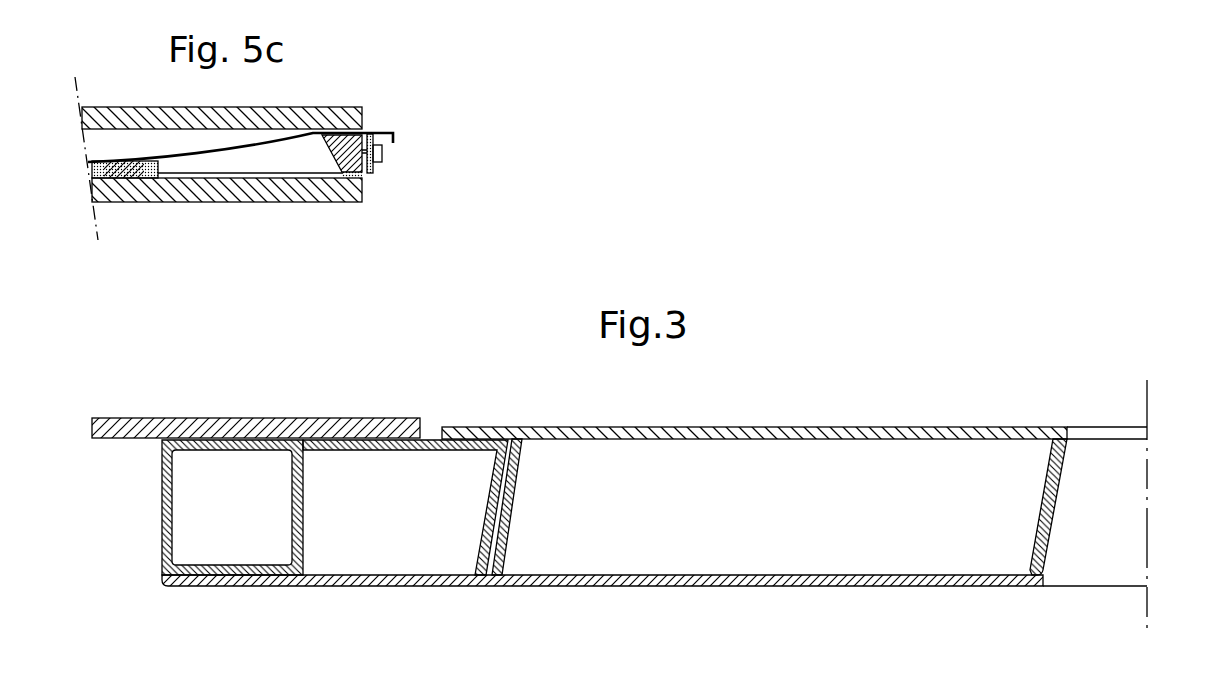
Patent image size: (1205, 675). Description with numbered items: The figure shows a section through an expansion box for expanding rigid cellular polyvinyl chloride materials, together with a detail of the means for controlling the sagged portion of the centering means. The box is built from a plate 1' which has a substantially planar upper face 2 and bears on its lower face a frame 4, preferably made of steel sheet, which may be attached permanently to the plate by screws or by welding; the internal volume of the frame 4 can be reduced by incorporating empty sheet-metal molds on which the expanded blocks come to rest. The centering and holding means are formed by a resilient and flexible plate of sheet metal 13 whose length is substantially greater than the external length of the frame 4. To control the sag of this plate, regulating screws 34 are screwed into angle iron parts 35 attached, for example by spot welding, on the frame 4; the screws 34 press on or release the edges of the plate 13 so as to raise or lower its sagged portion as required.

In FIG. 3, the plate 1' is at (256, 399).
In FIG. 5C, the upper face 2 is at (277, 187).
In FIG. 5C, the frame 4 is at (340, 150).
In FIG. 3, the frame 4 is at (360, 593).
In FIG. 5C, the resilient and flexible plate of sheet metal 13 is at (200, 158).
In FIG. 5C, the regulating screw 34 is at (382, 160).
In FIG. 5C, the angle iron part 35 is at (375, 175).